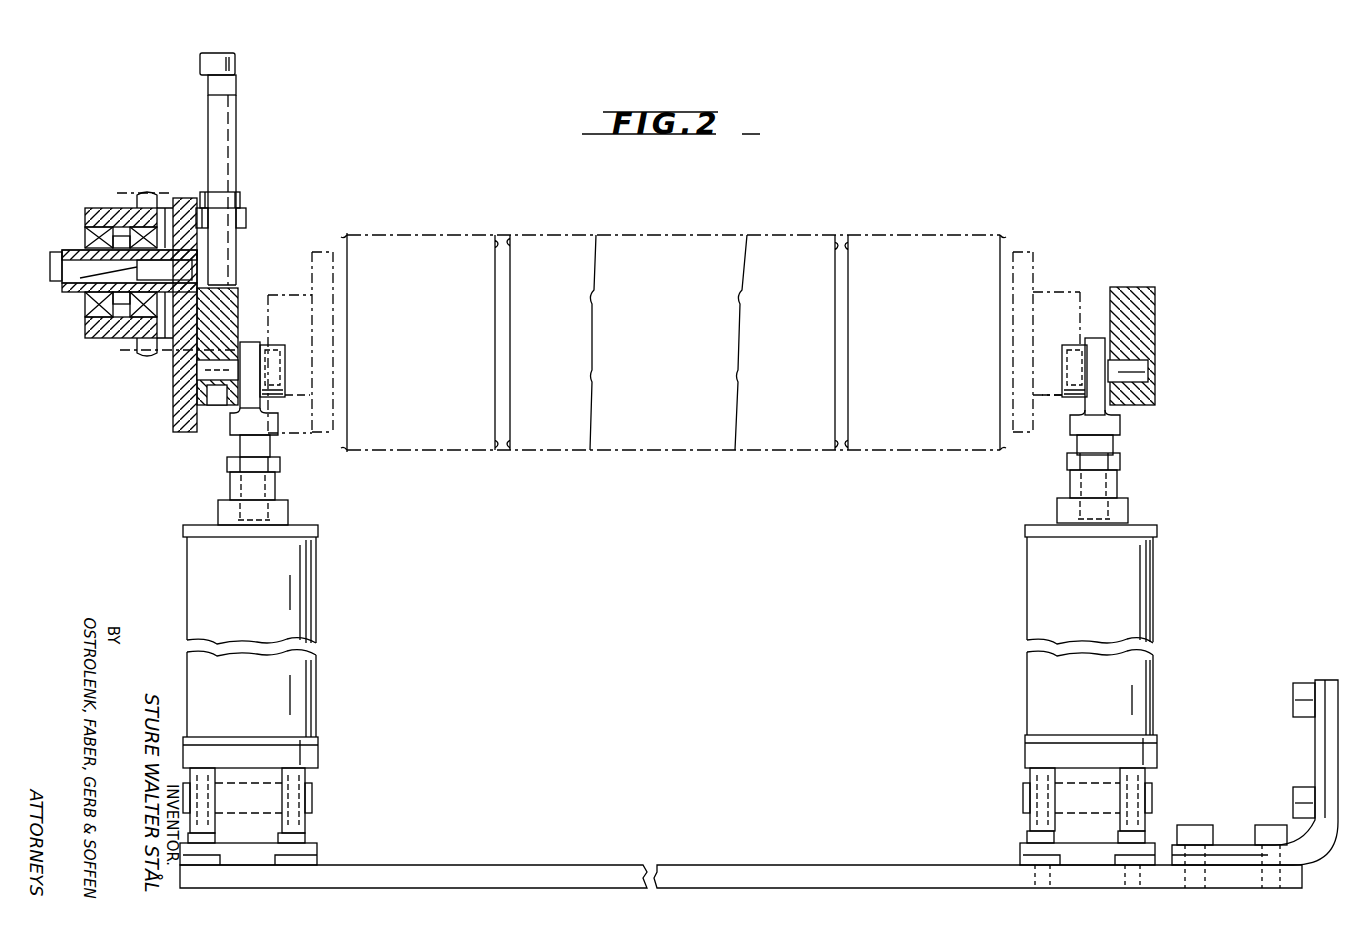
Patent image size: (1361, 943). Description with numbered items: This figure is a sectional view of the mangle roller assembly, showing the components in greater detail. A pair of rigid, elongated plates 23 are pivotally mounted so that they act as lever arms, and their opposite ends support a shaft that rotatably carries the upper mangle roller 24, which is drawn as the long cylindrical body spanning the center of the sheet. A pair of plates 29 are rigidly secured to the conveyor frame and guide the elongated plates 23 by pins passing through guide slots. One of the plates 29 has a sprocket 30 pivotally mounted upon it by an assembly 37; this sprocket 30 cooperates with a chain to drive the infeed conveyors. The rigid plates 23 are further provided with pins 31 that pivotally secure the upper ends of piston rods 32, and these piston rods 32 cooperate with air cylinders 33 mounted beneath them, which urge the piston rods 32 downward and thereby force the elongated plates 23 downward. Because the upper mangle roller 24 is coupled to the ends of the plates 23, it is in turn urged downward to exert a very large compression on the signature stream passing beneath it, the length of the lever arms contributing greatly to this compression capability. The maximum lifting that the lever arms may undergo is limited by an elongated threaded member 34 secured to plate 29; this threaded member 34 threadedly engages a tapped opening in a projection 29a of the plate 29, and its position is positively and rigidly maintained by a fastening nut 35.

The rigid elongated plates 23 is at (240, 290).
The upper mangle roller 24 is at (935, 361).
The plates 29 is at (183, 198).
The projection 29a is at (246, 222).
The sprocket 30 is at (103, 208).
The pins 31 is at (285, 365).
The piston rods 32 is at (272, 440).
The air cylinders 33 is at (318, 597).
The elongated threaded member 34 is at (232, 140).
The fastening nut 35 is at (240, 198).
The assembly 37 is at (80, 288).